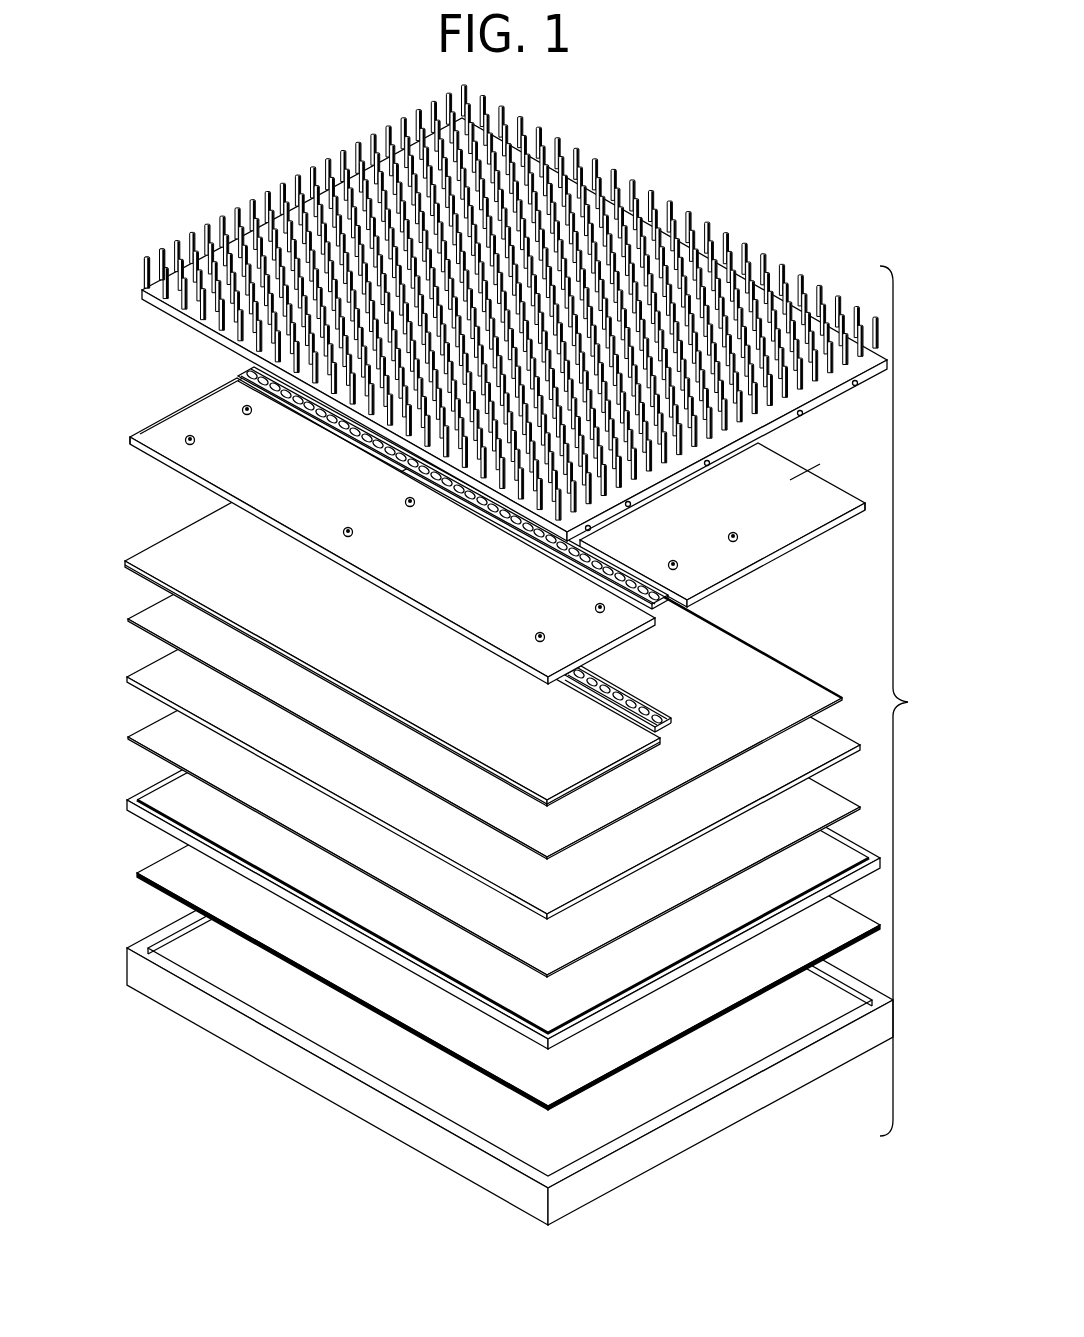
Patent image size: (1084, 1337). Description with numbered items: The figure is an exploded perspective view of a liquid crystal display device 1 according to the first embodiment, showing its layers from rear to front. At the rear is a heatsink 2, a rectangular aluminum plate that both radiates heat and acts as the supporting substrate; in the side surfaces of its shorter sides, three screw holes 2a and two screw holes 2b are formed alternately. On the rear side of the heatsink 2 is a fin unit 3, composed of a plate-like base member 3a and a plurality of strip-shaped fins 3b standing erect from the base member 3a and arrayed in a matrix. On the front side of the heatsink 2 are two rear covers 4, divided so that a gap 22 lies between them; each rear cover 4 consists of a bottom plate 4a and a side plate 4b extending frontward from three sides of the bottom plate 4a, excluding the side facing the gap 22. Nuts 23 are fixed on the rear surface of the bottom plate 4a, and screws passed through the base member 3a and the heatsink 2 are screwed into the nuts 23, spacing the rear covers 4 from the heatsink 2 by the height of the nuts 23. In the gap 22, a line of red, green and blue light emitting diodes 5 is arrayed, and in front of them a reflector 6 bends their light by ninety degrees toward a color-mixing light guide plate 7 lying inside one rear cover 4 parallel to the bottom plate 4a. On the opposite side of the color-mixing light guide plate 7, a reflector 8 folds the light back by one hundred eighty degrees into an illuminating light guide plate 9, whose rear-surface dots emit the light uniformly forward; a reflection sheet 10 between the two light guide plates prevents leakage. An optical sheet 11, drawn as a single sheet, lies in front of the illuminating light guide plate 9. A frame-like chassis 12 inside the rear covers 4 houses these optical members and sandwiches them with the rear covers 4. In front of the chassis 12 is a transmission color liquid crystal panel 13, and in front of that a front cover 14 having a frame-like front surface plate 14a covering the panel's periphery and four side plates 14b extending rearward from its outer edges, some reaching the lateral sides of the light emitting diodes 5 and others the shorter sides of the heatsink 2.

The liquid crystal display device 1 is at (896, 701).
The heatsink 2 is at (481, 319).
The screw holes 2a is at (855, 386).
The screw holes 2b is at (800, 416).
The fin unit 3 is at (474, 302).
The base member 3a is at (162, 291).
The fins 3b is at (146, 264).
The rear covers 4 is at (477, 517).
The bottom plate 4a is at (142, 430).
The side plate 4b is at (130, 438).
The light emitting diodes 5 is at (501, 498).
The reflector 6 is at (662, 722).
The color-mixing light guide plate 7 is at (376, 648).
The reflector 8 is at (142, 569).
The illuminating light guide plate 9 is at (153, 677).
The reflection sheet 10 is at (155, 618).
The optical sheet 11 is at (160, 733).
The chassis 12 is at (158, 820).
The liquid crystal panel 13 is at (160, 870).
The front cover 14 is at (480, 992).
The front surface plate 14a is at (167, 963).
The side plates 14b is at (158, 950).
The gap 22 is at (660, 613).
The nuts 23 is at (190, 436).